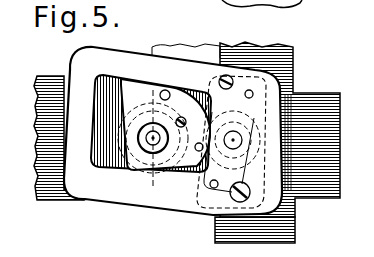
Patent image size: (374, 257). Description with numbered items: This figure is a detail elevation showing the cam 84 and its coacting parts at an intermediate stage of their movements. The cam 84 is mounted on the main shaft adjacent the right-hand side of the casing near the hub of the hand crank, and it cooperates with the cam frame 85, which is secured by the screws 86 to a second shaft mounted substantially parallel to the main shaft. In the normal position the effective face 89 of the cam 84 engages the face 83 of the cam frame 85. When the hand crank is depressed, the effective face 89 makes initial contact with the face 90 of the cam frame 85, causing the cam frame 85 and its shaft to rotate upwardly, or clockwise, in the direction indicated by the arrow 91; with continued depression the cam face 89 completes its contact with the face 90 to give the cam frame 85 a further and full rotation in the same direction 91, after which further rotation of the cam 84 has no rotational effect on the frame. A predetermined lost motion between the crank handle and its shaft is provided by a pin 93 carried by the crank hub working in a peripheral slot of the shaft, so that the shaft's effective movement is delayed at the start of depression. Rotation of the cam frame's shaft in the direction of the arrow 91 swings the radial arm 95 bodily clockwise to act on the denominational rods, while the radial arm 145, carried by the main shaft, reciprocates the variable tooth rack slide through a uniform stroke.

The radial arm 145 is at (160, 46).
The radial arm 95 is at (275, 6).
The cam frame 85 is at (81, 62).
The face of the cam frame 90 is at (124, 84).
The cam 84 is at (176, 91).
The effective face of the cam 89 is at (197, 93).
The screws 86 is at (234, 92).
The arrow 91 is at (278, 140).
The pin 93 is at (141, 177).
The face of the cam frame 83 is at (184, 177).